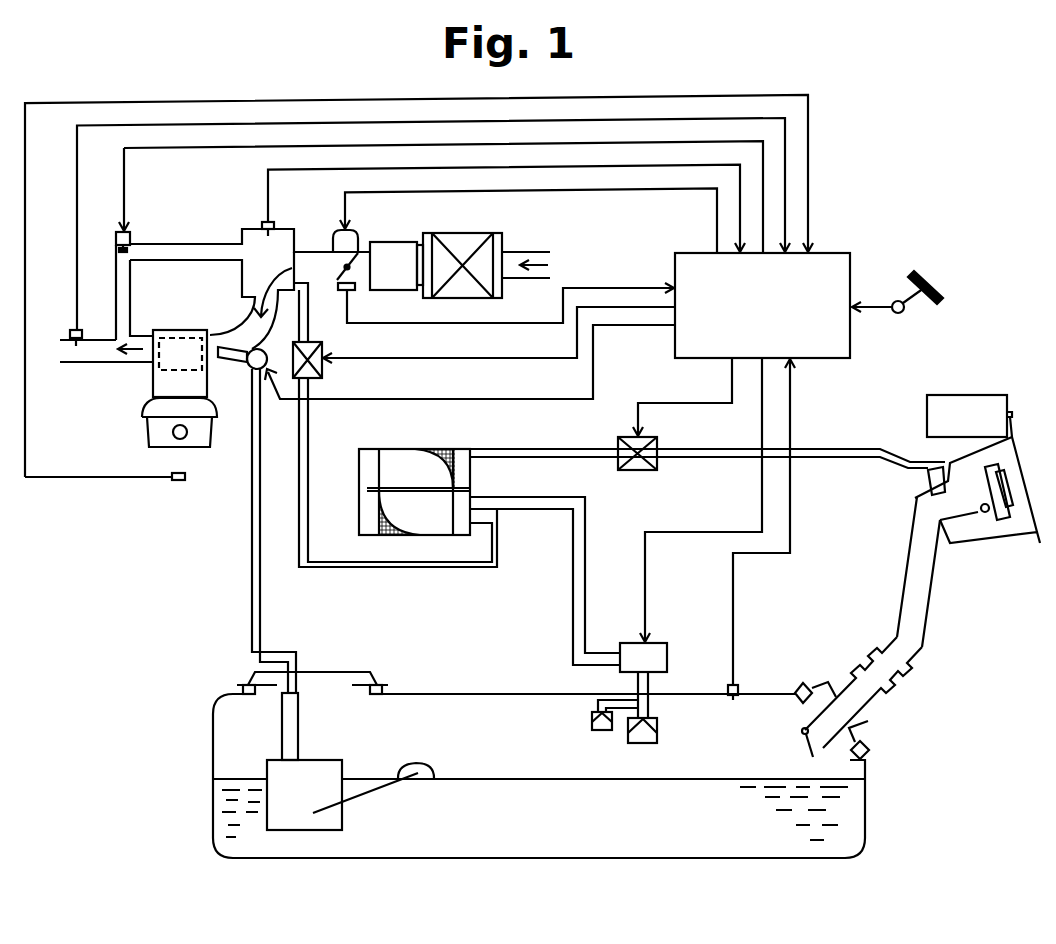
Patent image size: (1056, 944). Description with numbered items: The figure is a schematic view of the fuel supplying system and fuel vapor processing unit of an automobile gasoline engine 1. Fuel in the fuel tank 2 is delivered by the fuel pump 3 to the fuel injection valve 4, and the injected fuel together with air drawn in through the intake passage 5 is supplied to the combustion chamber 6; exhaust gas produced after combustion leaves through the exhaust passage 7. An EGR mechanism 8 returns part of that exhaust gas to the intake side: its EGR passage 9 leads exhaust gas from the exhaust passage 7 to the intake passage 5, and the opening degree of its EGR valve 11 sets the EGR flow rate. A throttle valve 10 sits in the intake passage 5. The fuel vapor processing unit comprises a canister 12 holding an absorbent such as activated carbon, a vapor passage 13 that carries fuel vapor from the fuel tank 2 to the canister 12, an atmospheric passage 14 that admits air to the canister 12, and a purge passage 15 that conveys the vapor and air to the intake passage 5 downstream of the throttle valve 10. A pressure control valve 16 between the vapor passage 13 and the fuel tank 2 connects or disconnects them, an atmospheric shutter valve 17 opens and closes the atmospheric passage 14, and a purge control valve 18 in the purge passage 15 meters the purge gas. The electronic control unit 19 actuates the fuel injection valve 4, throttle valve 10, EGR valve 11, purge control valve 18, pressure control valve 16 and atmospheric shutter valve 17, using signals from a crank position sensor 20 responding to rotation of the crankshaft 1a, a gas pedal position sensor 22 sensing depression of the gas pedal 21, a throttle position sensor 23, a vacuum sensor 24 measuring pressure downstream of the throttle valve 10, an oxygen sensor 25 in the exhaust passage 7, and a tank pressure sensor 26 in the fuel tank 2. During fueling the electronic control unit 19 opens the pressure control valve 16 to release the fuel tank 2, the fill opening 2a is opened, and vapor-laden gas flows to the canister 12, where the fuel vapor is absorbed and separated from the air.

The engine 1 is at (126, 397).
The crankshaft 1a is at (186, 438).
The fuel tank 2 is at (466, 673).
The fill opening 2a is at (990, 513).
The fuel pump 3 is at (334, 758).
The fuel injection valve 4 is at (249, 369).
The intake passage 5 is at (244, 277).
The combustion chamber 6 is at (176, 338).
The exhaust passage 7 is at (104, 362).
The EGR mechanism 8 is at (181, 230).
The EGR passage 9 is at (116, 300).
The throttle valve 10 is at (336, 275).
The EGR valve 11 is at (116, 234).
The canister 12 is at (380, 448).
The vapor passage 13 is at (573, 590).
The atmospheric passage 14 is at (582, 449).
The purge passage 15 is at (309, 488).
The pressure control valve 16 is at (664, 643).
The atmospheric shutter valve 17 is at (652, 472).
The purge control valve 18 is at (322, 370).
The electronic control unit 19 is at (693, 253).
The crank position sensor 20 is at (178, 481).
The gas pedal 21 is at (938, 276).
The gas pedal position sensor 22 is at (898, 314).
The throttle position sensor 23 is at (357, 291).
The vacuum sensor 24 is at (262, 226).
The oxygen sensor 25 is at (70, 332).
The tank pressure sensor 26 is at (740, 690).